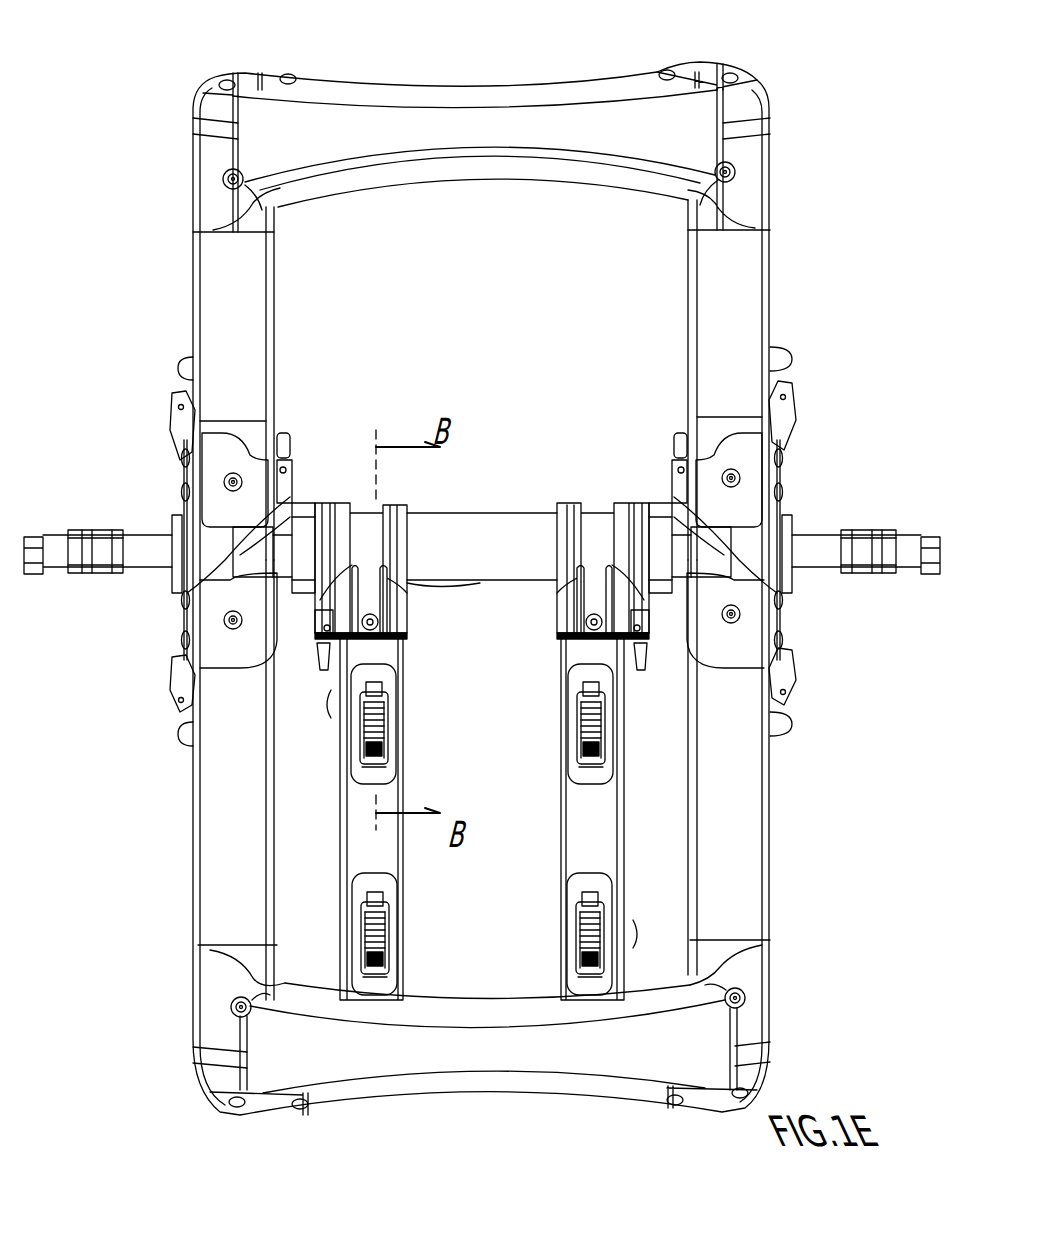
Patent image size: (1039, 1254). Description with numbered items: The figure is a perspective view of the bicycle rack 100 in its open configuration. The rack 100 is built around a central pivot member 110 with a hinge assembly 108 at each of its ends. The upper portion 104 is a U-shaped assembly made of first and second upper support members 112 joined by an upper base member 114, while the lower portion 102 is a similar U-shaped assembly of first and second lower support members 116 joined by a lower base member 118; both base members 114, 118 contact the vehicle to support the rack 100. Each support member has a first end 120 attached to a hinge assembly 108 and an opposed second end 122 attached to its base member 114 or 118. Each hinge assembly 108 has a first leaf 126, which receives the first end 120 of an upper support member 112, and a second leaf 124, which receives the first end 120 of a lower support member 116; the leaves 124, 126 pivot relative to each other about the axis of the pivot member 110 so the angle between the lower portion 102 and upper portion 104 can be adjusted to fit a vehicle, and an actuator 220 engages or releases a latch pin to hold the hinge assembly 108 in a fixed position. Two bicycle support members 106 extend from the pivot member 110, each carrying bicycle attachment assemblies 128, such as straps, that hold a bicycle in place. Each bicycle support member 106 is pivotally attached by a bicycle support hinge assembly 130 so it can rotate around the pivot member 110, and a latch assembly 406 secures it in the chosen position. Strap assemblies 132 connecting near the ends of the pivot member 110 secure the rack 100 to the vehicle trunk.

The bicycle rack 100 is at (812, 64).
The lower portion 102 is at (186, 808).
The upper portion 104 is at (182, 258).
The bicycle support member 106 is at (568, 870).
The hinge assembly 108 is at (755, 537).
The central pivot member 110 is at (510, 520).
The upper support member 112 is at (222, 293).
The upper base member 114 is at (633, 83).
The lower support member 116 is at (222, 832).
The lower base member 118 is at (333, 1097).
The first end 120 is at (247, 437).
The second end 122 is at (245, 226).
The second leaf 124 is at (205, 458).
The first leaf 126 is at (210, 638).
The bicycle attachment assembly 128 is at (580, 675).
The bicycle support hinge assembly 130 is at (560, 607).
The strap assembly 132 is at (178, 433).
The actuator 220 is at (290, 440).
The latch assembly 406 is at (315, 636).